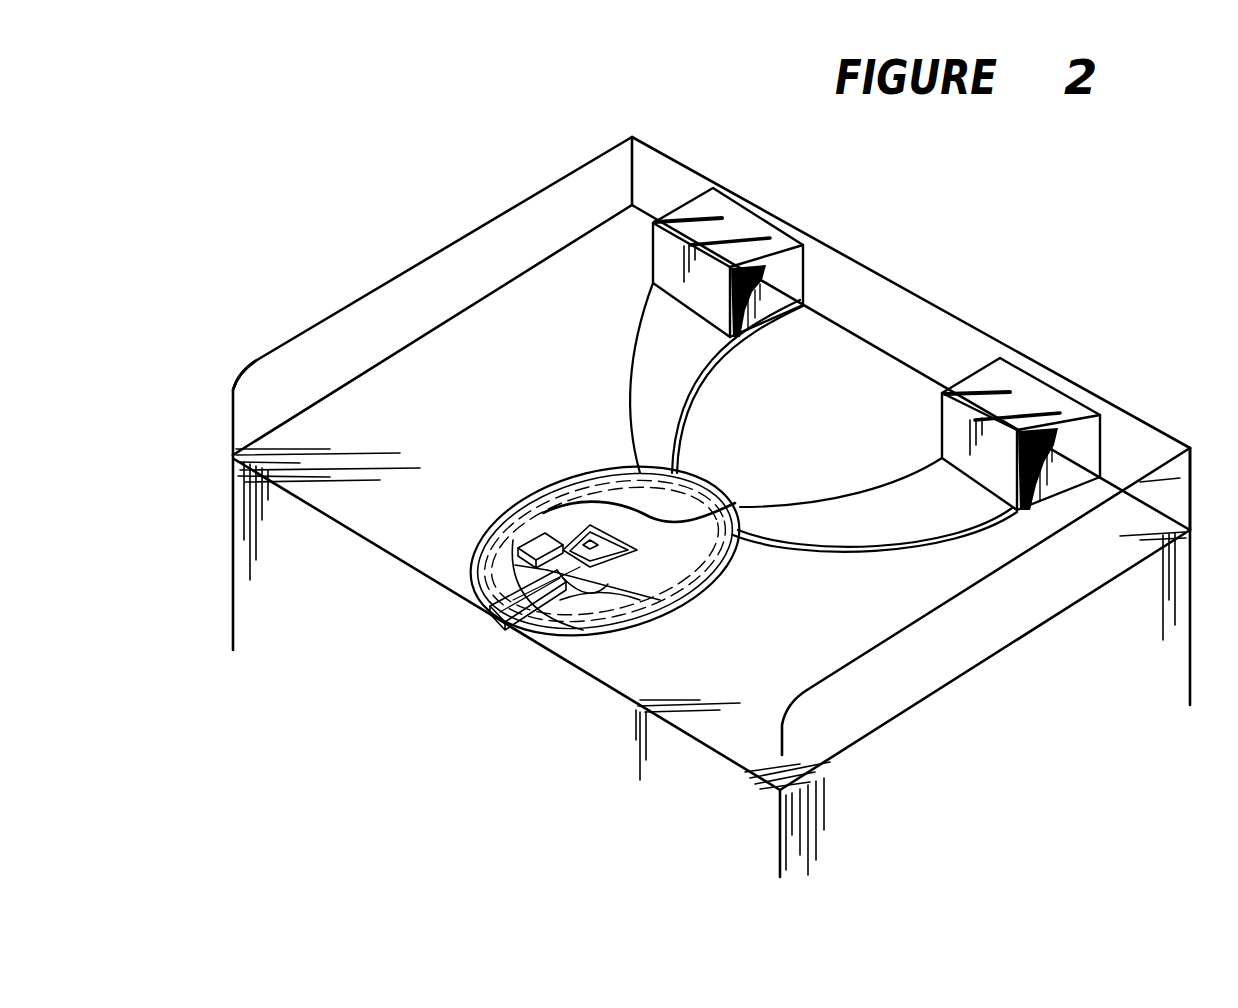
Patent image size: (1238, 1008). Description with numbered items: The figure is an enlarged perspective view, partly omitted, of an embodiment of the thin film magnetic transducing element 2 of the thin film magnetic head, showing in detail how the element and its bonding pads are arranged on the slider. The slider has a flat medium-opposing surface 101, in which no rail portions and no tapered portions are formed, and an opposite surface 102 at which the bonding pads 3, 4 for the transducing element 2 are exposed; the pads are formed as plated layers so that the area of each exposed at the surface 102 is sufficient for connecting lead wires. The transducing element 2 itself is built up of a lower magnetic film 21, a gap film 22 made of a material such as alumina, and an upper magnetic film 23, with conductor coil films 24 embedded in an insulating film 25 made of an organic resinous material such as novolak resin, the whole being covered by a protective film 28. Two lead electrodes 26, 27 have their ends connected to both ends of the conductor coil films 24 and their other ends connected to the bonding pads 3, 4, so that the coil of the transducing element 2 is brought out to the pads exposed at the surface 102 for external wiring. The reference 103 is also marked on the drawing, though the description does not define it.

The thin film magnetic transducing element 2 is at (608, 549).
The bonding pad 3 is at (743, 232).
The bonding pad 4 is at (1035, 410).
The lower magnetic film 21 is at (583, 588).
The gap film 22 is at (507, 622).
The upper magnetic film 23 is at (520, 560).
The conductor coil films 24 is at (653, 623).
The insulating film 25 is at (680, 600).
The lead electrode 26 is at (632, 400).
The lead electrode 27 is at (873, 518).
The protective film 28 is at (252, 374).
The medium-opposing surface 101 is at (295, 592).
The surface 102 is at (895, 357).
The wall top edge 103 is at (513, 236).